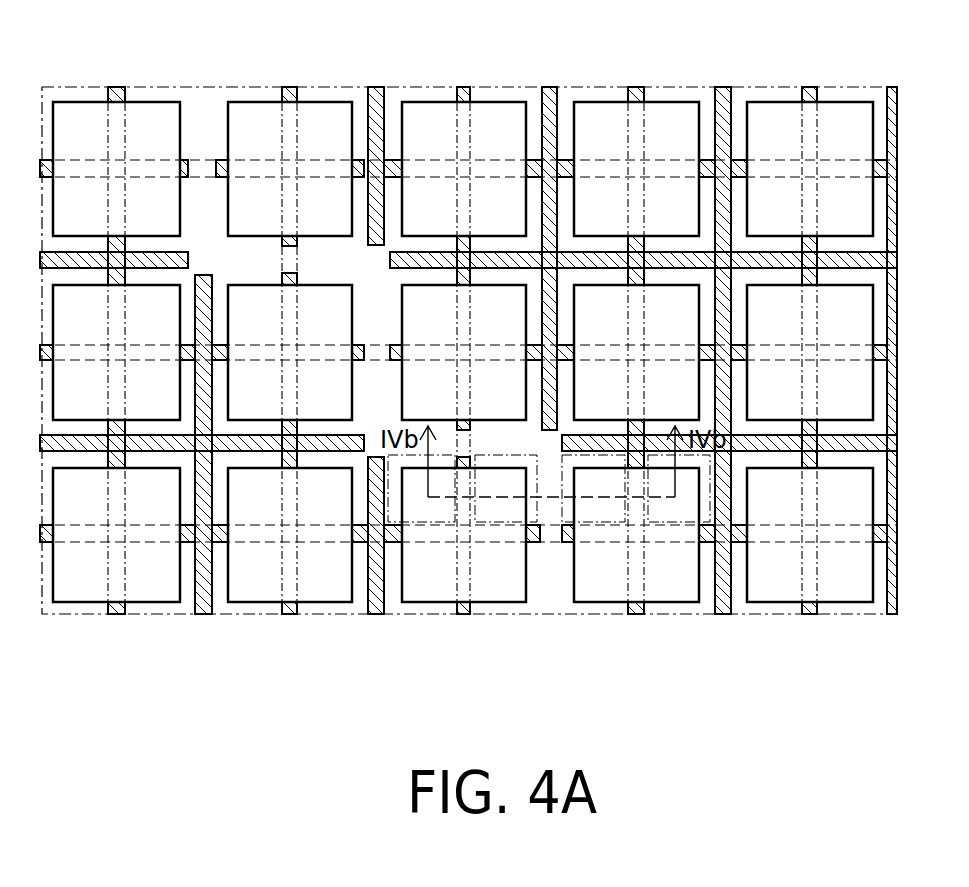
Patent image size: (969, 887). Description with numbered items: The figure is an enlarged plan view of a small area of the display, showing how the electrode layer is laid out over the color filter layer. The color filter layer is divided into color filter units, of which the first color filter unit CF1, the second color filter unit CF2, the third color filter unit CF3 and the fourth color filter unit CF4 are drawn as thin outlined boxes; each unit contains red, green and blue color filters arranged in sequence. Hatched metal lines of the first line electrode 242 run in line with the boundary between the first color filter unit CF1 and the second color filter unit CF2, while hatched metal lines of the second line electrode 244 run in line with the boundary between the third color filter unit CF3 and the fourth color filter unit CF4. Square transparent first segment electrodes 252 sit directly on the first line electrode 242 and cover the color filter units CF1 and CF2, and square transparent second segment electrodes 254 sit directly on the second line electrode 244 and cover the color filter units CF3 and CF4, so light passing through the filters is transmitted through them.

The first line electrode 242 is at (772, 537).
The second line electrode 244 is at (330, 535).
The first segment electrode 252 is at (429, 310).
The second segment electrode 254 is at (258, 305).
The first color filter unit CF1 is at (592, 523).
The second color filter unit CF2 is at (680, 523).
The third color filter unit CF3 is at (418, 523).
The fourth color filter unit CF4 is at (508, 523).